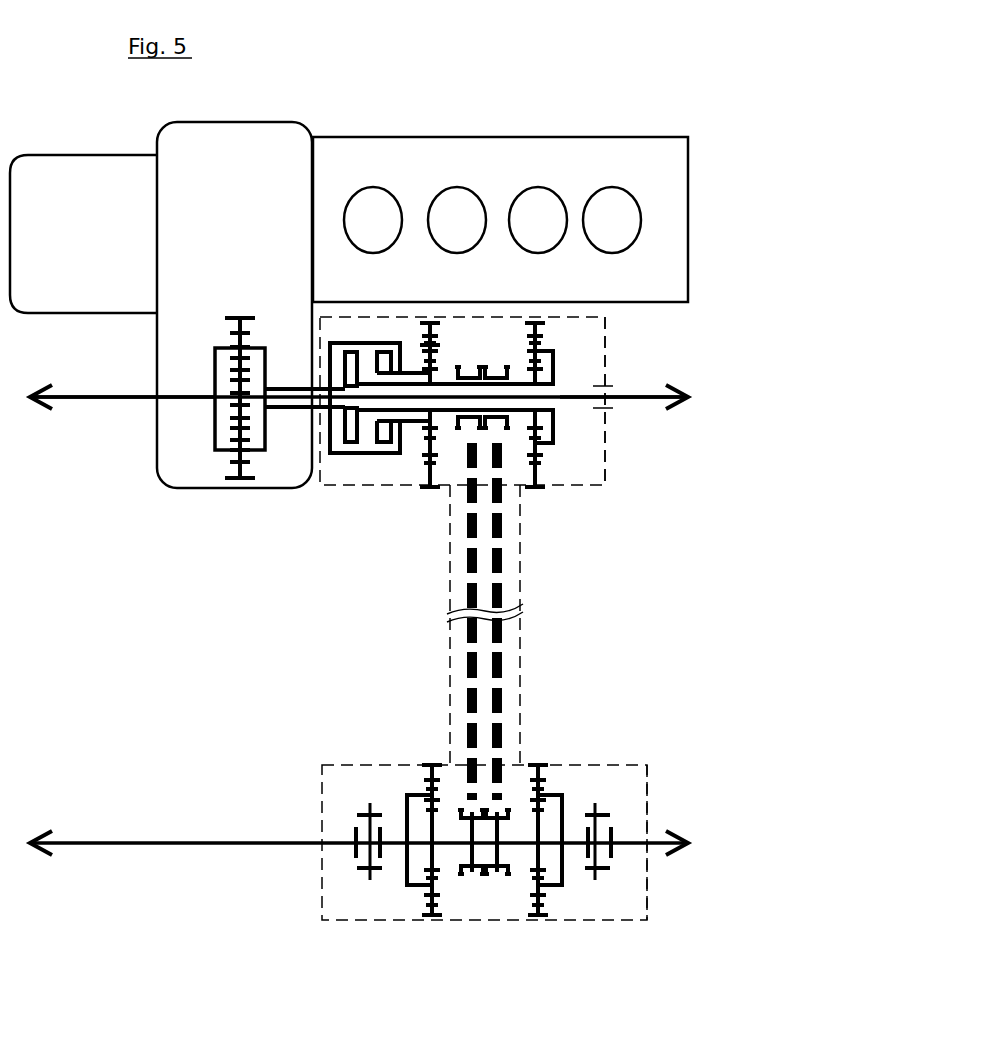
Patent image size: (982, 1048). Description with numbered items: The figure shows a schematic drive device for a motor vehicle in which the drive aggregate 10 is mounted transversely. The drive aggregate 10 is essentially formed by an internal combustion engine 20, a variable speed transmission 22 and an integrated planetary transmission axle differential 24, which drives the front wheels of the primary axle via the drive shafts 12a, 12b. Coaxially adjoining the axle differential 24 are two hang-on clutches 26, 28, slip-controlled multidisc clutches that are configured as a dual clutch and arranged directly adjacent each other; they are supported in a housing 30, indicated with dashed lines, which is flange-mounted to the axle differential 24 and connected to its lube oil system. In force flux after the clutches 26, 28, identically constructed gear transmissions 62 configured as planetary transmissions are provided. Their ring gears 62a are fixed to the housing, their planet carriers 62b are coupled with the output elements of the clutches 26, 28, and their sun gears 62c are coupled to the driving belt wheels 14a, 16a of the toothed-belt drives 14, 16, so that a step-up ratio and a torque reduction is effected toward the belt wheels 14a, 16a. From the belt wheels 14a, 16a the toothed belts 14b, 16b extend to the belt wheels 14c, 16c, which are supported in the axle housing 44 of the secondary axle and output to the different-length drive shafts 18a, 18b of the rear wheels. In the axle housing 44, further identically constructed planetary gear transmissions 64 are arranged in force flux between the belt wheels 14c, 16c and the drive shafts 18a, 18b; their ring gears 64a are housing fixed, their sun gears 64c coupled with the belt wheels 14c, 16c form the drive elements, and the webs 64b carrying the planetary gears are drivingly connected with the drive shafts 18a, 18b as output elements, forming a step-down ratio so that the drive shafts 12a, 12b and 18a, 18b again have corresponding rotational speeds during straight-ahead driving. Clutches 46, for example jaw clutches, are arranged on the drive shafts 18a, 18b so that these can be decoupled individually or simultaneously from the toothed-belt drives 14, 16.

The drive aggregate 10 is at (522, 117).
The drive shaft 12a is at (107, 403).
The drive shaft 12b is at (640, 393).
The toothed-belt drive 14 is at (465, 565).
The belt wheel 14a is at (470, 372).
The toothed-belt 14b is at (468, 663).
The belt wheel 14c is at (467, 872).
The toothed-belt drive 16 is at (503, 630).
The belt wheel 16a is at (497, 372).
The toothed-belt 16b is at (502, 665).
The belt wheel 16c is at (490, 872).
The drive shaft 18a is at (170, 840).
The drive shaft 18b is at (660, 842).
The internal combustion engine 20 is at (432, 181).
The variable speed transmission 22 is at (100, 249).
The axle differential 24 is at (213, 333).
The hang-on clutch 26 is at (355, 465).
The hang-on clutch 28 is at (390, 465).
The housing 30 is at (605, 357).
The axle housing 44 is at (617, 923).
The clutch 46 is at (363, 812).
The gear transmission 62 is at (430, 497).
The ring gear 62a is at (428, 331).
The planet carrier 62b is at (420, 347).
The sun gear 62c is at (433, 373).
The gear transmission 64 is at (433, 927).
The ring gear 64a is at (423, 905).
The web 64b is at (400, 882).
The sun gear 64c is at (410, 815).